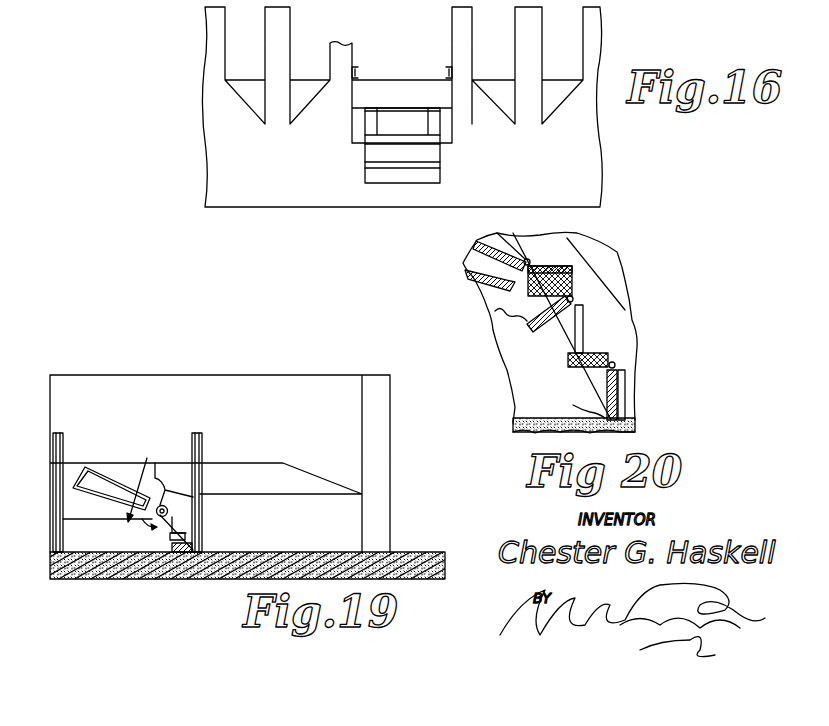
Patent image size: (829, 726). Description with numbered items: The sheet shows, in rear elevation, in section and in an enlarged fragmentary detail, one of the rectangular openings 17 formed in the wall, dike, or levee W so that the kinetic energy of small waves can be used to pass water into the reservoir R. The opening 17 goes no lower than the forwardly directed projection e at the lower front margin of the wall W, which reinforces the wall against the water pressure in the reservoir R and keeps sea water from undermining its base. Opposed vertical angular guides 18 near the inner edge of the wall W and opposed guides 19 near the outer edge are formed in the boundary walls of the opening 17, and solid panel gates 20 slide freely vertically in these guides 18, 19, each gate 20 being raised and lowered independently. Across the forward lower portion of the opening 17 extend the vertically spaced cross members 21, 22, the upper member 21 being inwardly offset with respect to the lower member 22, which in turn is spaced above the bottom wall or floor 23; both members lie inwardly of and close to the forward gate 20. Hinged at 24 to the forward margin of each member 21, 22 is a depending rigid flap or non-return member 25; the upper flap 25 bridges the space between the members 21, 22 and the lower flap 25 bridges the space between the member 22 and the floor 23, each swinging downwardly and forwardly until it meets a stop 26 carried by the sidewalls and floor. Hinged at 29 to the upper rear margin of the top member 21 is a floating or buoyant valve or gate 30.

In FIG. 16, the rectangular opening 17 is at (404, 124).
In FIG. 19, the rectangular opening 17 is at (306, 437).
In FIG. 19, the vertical angular guide 18 is at (63, 449).
In FIG. 16, the vertical angular guide 19 is at (402, 62).
In FIG. 19, the vertical angular guide 19 is at (203, 441).
In FIG. 19, the solid panel gate 20 is at (55, 450).
In FIG. 19, the upper cross member 21 is at (174, 513).
In FIG. 20, the upper cross member 21 is at (574, 275).
In FIG. 19, the lower cross member 22 is at (188, 533).
In FIG. 20, the lower cross member 22 is at (598, 355).
In FIG. 19, the bottom wall or floor 23 is at (293, 558).
In FIG. 20, the bottom wall or floor 23 is at (545, 418).
In FIG. 20, the hinge connection 24 is at (573, 299).
In FIG. 19, the rigid flap or non-return member 25 is at (190, 546).
In FIG. 20, the rigid flap or non-return member 25 is at (540, 334).
In FIG. 20, the stop 26 is at (584, 330).
In FIG. 19, the hinge connection 29 is at (157, 507).
In FIG. 20, the hinge connection 29 is at (529, 260).
In FIG. 19, the floating or buoyant valve or gate 30 is at (108, 492).
In FIG. 20, the floating or buoyant valve or gate 30 is at (490, 263).
In FIG. 16, the wall, dike, or levee W is at (573, 163).
In FIG. 20, the wall, dike, or levee W is at (514, 423).
In FIG. 19, the reservoir R is at (408, 474).
In FIG. 19, the forwardly directed projection e is at (410, 558).